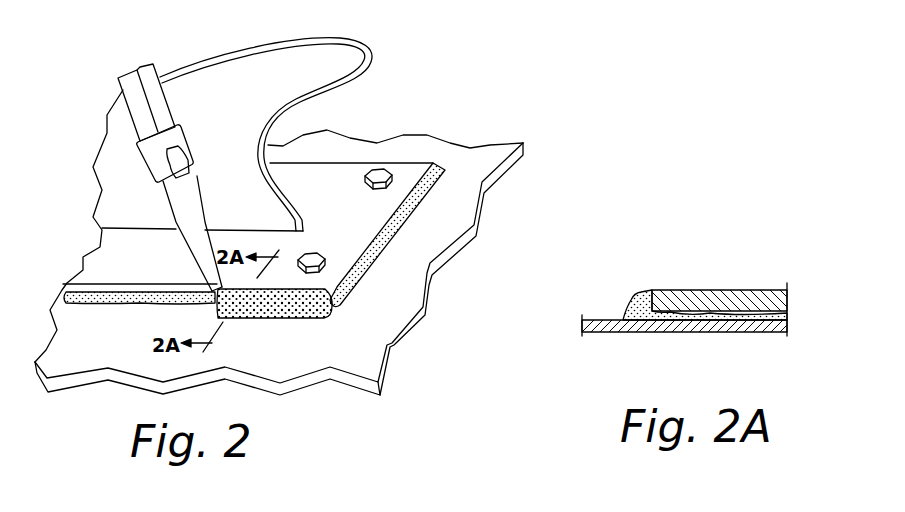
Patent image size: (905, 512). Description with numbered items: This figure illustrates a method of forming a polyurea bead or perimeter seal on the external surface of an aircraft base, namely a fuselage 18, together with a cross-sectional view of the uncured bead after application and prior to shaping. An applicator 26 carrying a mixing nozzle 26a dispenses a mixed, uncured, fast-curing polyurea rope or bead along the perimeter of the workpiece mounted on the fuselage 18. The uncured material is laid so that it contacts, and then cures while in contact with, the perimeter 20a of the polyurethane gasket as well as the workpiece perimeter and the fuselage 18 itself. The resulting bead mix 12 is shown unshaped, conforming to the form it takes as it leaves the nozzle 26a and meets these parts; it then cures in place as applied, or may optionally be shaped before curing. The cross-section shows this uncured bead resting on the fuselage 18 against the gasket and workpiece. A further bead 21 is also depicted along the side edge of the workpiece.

In FIG. 2, the applicator 26 is at (127, 73).
In FIG. 2, the mixing nozzle 26a is at (198, 259).
In FIG. 2, the outer perimeter of gasket 20a is at (130, 308).
In FIG. 2, the bead mix 12 is at (247, 317).
In FIG. 2, the weld bead along side edge 21 is at (308, 317).
In FIG. 2A, the fuselage 18 is at (698, 333).